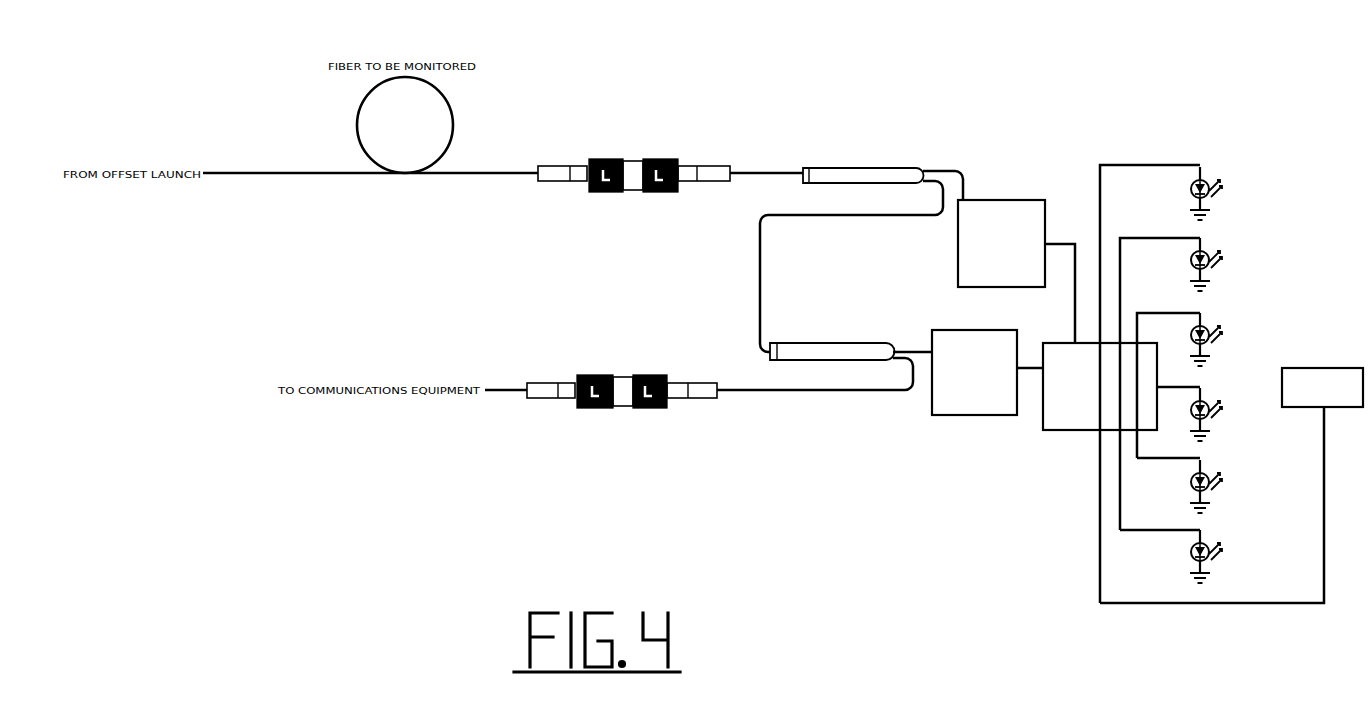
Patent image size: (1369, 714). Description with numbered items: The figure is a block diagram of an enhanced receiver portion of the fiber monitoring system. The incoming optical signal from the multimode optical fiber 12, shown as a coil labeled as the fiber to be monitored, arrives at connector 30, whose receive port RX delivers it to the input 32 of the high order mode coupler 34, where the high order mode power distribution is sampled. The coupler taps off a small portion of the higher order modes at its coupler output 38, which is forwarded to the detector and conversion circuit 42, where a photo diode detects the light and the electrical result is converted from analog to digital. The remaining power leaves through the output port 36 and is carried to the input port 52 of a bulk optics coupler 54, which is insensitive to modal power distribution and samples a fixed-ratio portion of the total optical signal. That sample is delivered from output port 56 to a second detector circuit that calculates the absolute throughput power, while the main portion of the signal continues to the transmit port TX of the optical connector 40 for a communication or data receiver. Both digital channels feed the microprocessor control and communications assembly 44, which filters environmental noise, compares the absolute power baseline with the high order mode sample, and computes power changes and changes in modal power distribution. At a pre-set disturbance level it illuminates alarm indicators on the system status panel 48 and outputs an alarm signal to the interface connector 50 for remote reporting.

The multimode optical fiber 12 is at (416, 125).
The connector 30 is at (634, 178).
The input 32 is at (766, 166).
The high order mode coupler 34 is at (863, 168).
The output port 36 is at (943, 178).
The coupler output 38 is at (851, 266).
The optical connector 40 is at (720, 390).
The detector and conversion circuit 42 is at (1016, 264).
The microprocessor control and communications assembly 44 is at (1100, 379).
The system status panel 48 is at (1161, 375).
The interface connector 50 is at (1231, 477).
The input port 52 is at (747, 345).
The bulk optics coupler 54 is at (851, 345).
The output port 56 is at (987, 364).